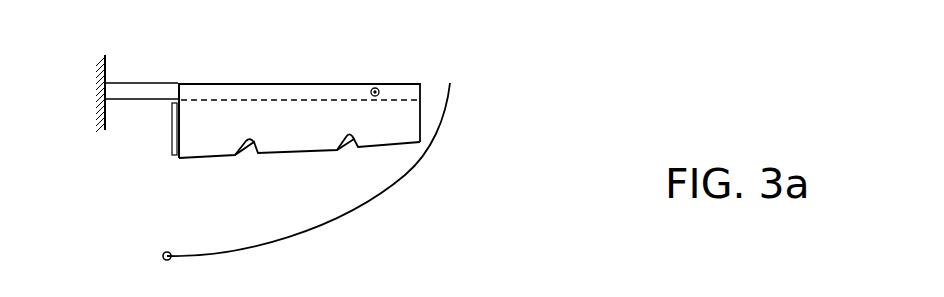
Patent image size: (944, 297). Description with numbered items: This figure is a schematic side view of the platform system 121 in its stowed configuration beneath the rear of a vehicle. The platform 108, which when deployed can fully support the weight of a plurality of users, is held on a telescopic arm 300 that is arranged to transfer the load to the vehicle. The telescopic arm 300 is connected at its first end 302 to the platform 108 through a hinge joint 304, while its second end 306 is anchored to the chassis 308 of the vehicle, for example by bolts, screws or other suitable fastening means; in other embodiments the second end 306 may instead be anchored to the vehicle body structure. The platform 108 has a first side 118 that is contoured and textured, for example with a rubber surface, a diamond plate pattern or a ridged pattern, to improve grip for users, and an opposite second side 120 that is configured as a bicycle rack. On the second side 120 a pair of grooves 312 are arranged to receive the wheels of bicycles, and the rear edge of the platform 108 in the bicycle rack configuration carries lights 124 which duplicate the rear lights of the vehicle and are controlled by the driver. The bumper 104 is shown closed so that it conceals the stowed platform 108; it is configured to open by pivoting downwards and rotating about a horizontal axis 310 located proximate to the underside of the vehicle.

The bumper 104 is at (361, 211).
The platform 108 is at (420, 118).
The first side 118 is at (303, 83).
The second side 120 is at (298, 153).
The platform system 121 is at (561, 113).
The lights 124 is at (176, 156).
The telescopic arm 300 is at (163, 100).
The first end 302 is at (389, 52).
The hinge joint 304 is at (372, 88).
The second end 306 is at (112, 118).
The chassis 308 is at (107, 66).
The horizontal axis 310 is at (163, 253).
The grooves 312 is at (253, 152).